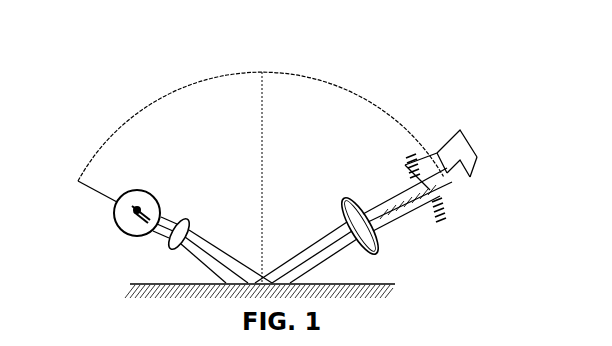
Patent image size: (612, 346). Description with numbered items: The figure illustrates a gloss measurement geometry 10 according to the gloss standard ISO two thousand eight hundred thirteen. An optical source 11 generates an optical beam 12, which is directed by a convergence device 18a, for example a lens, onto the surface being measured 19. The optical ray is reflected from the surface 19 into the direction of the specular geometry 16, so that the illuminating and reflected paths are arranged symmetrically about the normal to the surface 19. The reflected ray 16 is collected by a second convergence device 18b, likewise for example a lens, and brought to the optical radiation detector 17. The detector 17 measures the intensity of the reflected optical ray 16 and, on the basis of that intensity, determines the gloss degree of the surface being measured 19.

The gloss measurement geometry 10 is at (108, 96).
The optical source 11 is at (110, 217).
The optical beam 12 is at (212, 234).
The specular geometry direction 16 is at (306, 232).
The optical radiation detector 17 is at (442, 180).
The convergence device 18a is at (166, 252).
The convergence device 18b is at (394, 242).
The surface being measured 19 is at (283, 297).